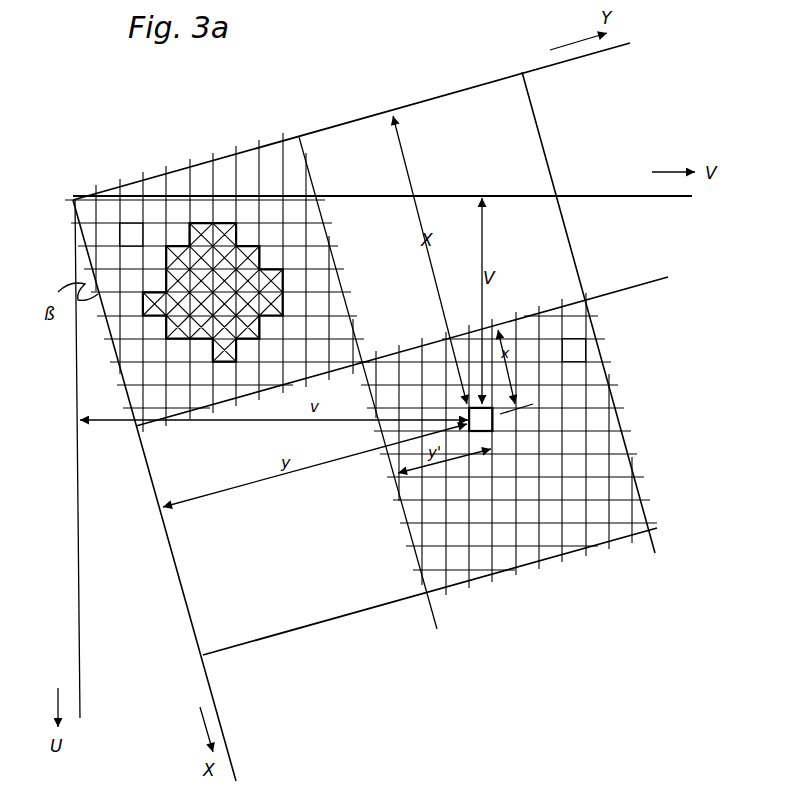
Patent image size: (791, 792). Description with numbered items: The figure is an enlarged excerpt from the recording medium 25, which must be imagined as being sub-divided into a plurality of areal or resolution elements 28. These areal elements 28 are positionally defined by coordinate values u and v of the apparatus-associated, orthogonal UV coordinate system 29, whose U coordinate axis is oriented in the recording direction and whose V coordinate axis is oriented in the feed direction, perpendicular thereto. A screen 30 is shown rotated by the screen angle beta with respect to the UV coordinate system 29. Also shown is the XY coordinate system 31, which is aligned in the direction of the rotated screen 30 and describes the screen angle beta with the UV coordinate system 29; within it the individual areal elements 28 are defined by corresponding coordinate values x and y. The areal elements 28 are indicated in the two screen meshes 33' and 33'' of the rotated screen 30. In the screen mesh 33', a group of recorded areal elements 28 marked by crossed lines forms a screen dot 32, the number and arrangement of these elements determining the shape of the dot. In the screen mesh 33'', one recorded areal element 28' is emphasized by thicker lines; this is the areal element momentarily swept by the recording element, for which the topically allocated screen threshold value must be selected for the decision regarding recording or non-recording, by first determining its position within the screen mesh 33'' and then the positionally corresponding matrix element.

The recording medium 25 is at (108, 582).
The areal element 28 is at (356, 254).
The recorded areal element 28' is at (507, 421).
The UV coordinate system 29 is at (590, 196).
The rotated screen 30 is at (612, 400).
The XY coordinate system 31 is at (400, 107).
The screen dot 32 is at (234, 232).
The screen mesh 33' is at (217, 263).
The screen mesh 33'' is at (524, 444).